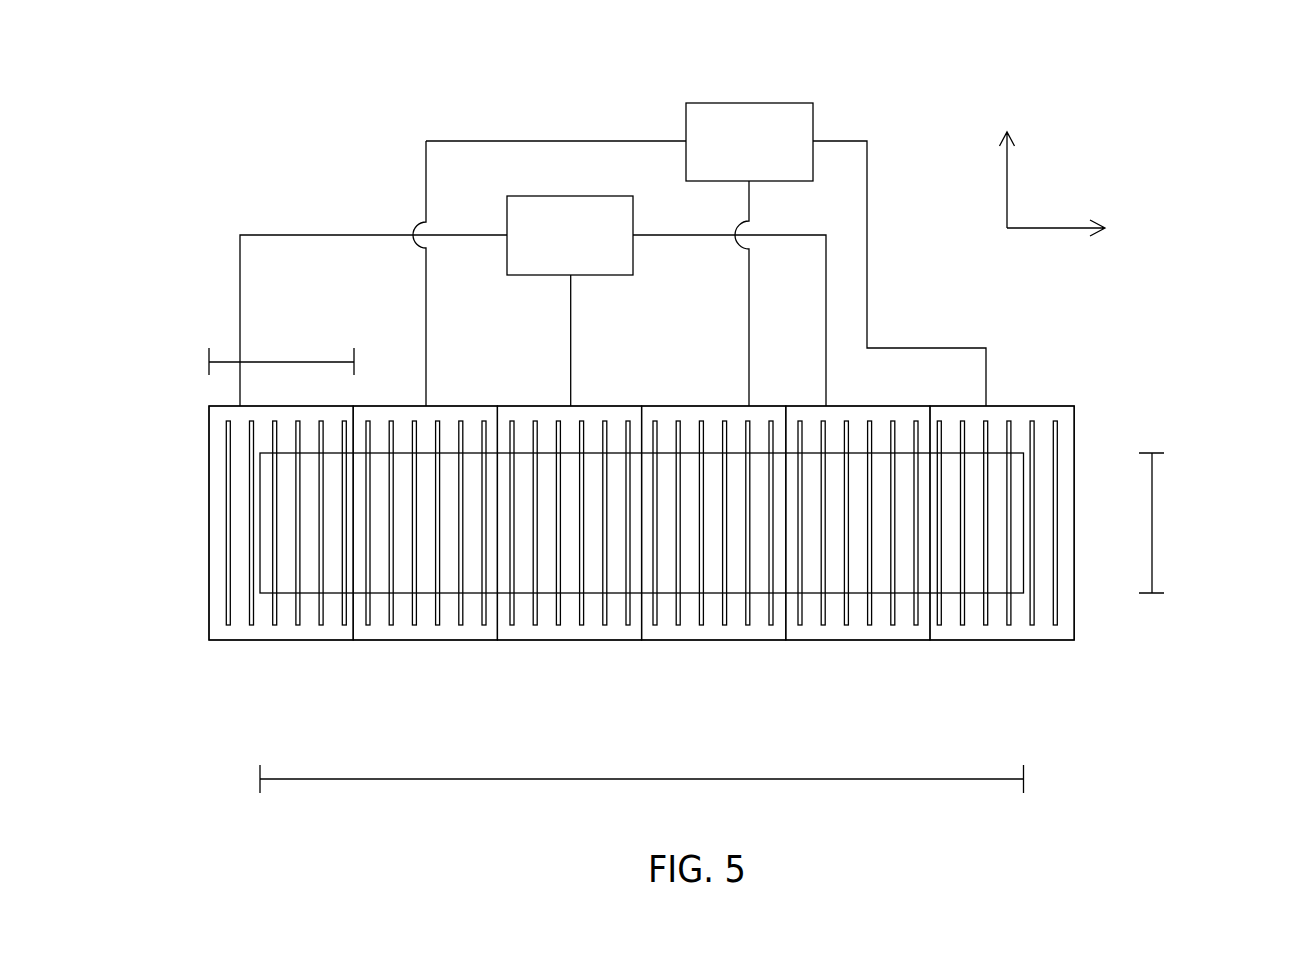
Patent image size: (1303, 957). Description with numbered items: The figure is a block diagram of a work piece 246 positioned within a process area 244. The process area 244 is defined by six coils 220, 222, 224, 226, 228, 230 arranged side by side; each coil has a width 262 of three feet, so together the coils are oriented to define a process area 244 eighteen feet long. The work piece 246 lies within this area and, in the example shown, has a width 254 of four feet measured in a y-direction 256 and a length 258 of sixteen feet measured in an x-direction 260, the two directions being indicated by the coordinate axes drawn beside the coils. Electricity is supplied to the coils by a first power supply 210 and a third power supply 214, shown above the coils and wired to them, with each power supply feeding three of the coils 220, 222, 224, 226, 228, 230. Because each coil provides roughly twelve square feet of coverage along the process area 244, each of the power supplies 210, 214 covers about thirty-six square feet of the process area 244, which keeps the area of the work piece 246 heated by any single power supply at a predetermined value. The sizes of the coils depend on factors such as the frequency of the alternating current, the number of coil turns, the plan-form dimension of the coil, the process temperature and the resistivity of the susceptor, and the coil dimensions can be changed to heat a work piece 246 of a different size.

The first power supply 210 is at (608, 275).
The third power supply 214 is at (740, 103).
The coil 220 is at (226, 641).
The coil 222 is at (370, 641).
The coil 224 is at (514, 641).
The coil 226 is at (659, 641).
The coil 228 is at (803, 641).
The coil 230 is at (947, 641).
The process area 244 is at (1078, 417).
The work piece 246 is at (258, 475).
The width 254 is at (1152, 497).
The y-direction 256 is at (1006, 185).
The length 258 is at (980, 780).
The x-direction 260 is at (1053, 228).
The width 262 is at (310, 361).